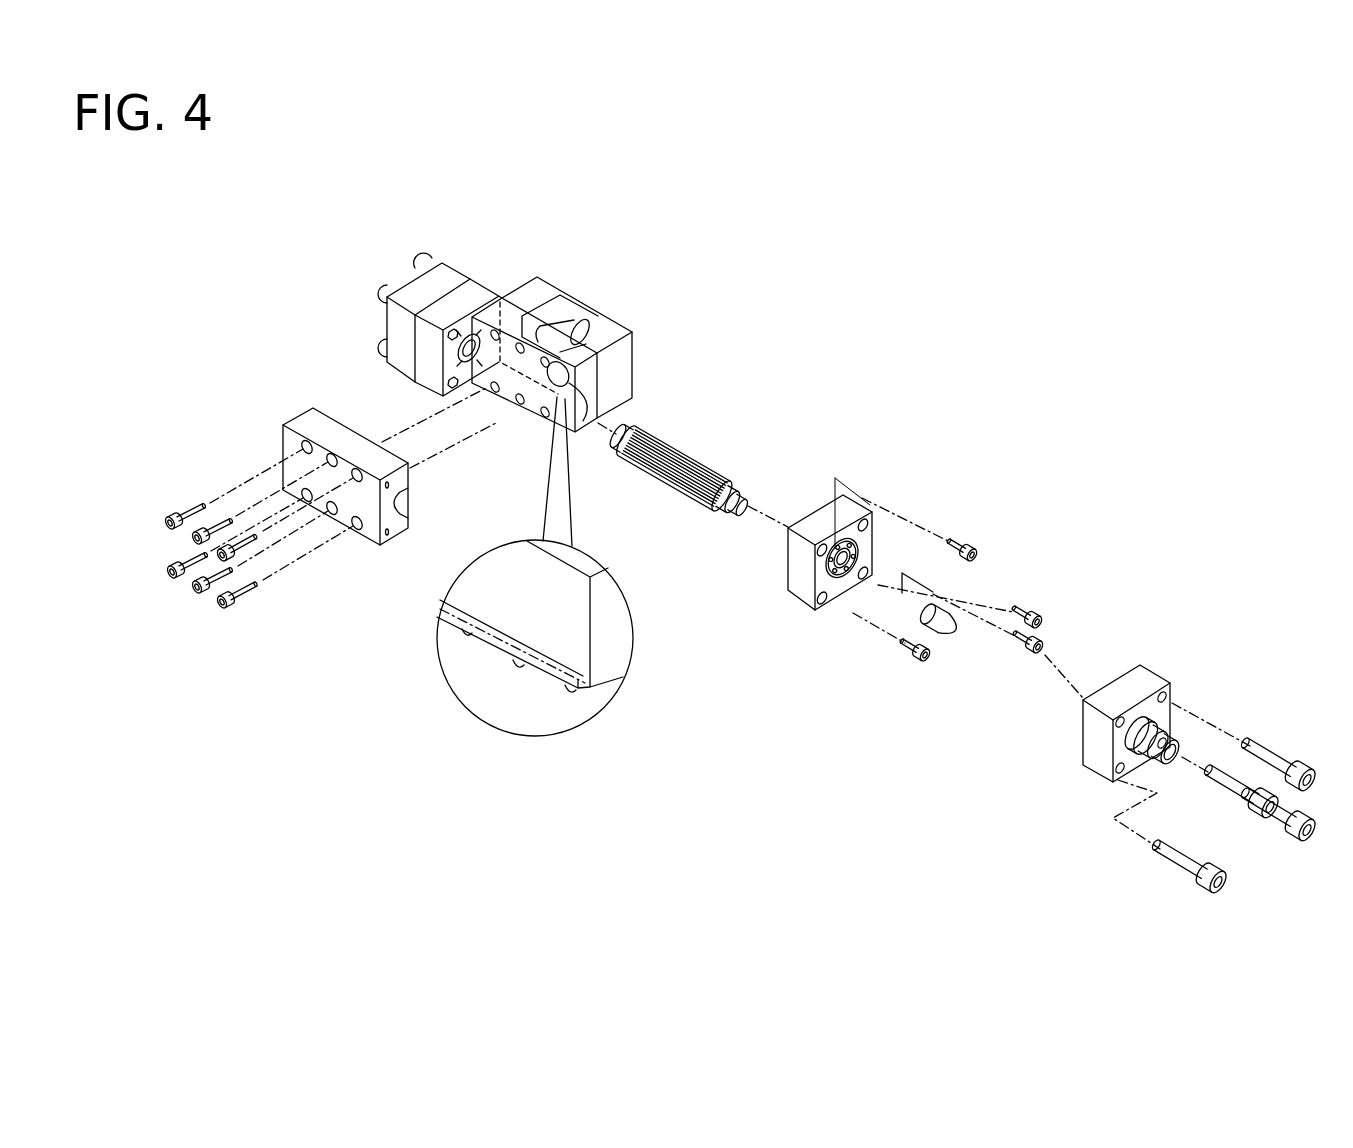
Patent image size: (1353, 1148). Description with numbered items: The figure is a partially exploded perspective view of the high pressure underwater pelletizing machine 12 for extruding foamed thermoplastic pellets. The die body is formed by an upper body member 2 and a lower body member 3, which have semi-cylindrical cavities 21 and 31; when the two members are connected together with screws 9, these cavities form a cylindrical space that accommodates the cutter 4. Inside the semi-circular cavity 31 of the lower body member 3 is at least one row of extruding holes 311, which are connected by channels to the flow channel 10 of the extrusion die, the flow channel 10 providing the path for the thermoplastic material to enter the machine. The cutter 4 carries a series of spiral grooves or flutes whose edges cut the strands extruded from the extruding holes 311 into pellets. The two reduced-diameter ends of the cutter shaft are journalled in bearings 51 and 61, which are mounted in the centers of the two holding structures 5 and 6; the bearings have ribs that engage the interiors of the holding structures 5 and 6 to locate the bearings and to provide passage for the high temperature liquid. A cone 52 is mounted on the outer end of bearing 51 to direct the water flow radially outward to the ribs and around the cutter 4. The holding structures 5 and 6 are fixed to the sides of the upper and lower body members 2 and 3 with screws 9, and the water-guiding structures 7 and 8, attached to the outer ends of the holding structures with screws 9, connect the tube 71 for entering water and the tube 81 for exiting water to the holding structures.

The upper body member 2 is at (298, 404).
The semi-cylindrical cavity 21 is at (404, 494).
The lower body member 3 is at (533, 416).
The semi-cylindrical cavity 31 is at (570, 418).
The extruding holes 311 is at (570, 696).
The cutter 4 is at (698, 450).
The holding structure 5 is at (780, 560).
The bearing 51 is at (814, 584).
The cone 52 is at (943, 626).
The holding structure 6 is at (487, 281).
The bearing 61 is at (460, 366).
The water-guiding structure 7 is at (1146, 662).
The tube for entering water 71 is at (1174, 760).
The water-guiding structure 8 is at (458, 267).
The tube for exiting water 81 is at (372, 315).
The screws 9 is at (421, 256).
The flow channel 10 is at (563, 322).
The high pressure underwater pelletizing machine 12 is at (557, 278).